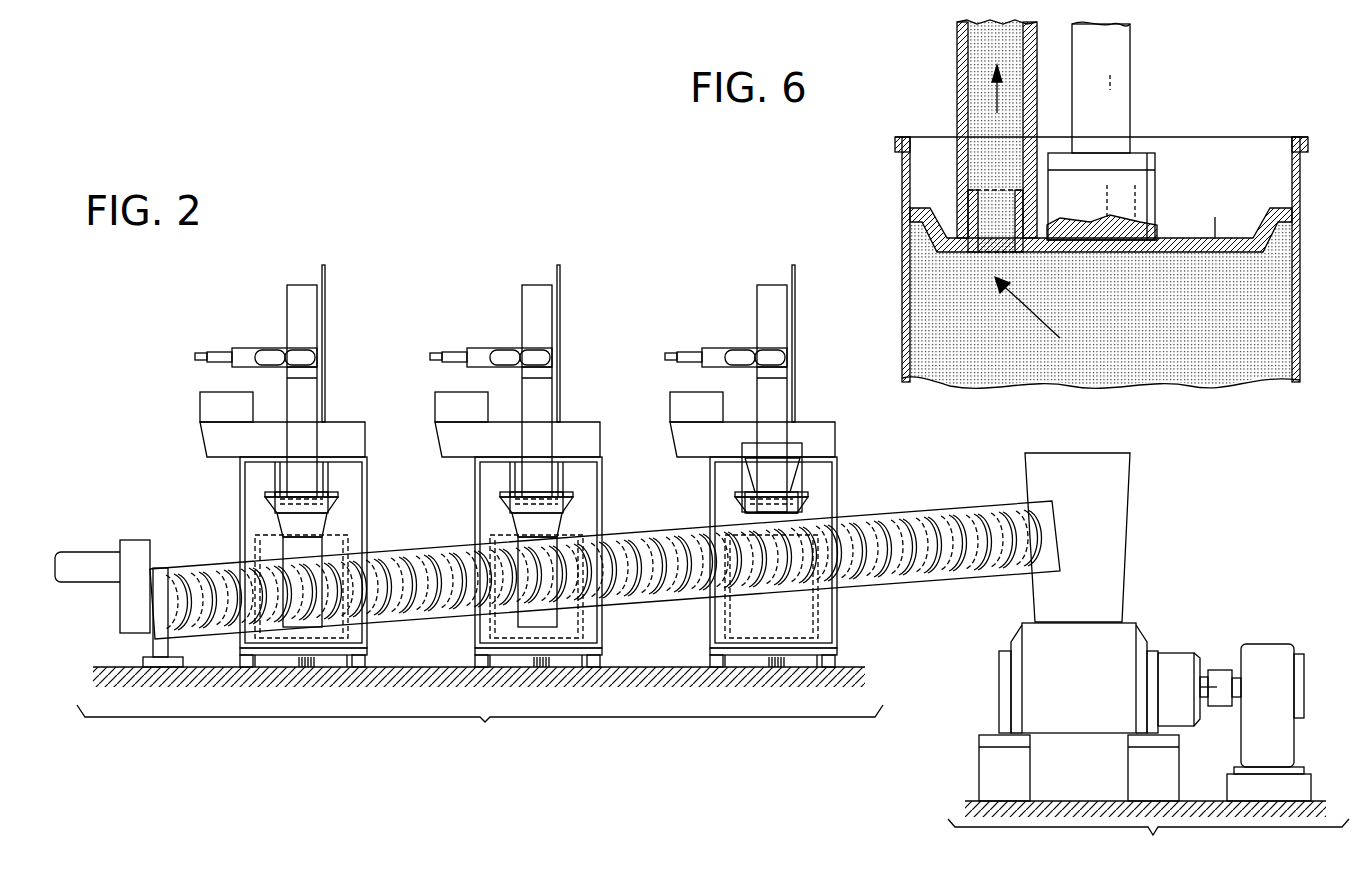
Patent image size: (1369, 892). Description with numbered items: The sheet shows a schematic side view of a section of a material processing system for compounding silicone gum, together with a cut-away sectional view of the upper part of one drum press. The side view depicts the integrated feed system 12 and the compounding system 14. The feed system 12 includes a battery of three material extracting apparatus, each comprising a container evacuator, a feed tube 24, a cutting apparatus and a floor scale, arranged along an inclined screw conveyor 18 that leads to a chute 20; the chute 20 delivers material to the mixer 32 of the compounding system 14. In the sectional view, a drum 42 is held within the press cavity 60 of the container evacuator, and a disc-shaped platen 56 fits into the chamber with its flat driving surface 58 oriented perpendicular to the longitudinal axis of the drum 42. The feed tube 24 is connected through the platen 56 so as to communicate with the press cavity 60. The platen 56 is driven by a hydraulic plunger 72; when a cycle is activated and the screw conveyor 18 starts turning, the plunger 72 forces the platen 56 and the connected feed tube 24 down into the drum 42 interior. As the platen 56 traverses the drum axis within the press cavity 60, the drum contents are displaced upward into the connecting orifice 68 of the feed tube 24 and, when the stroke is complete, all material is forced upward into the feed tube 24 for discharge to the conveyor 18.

In FIG. 2, the feed system 12 is at (480, 729).
In FIG. 2, the compounding system 14 is at (1148, 706).
In FIG. 2, the conveyor 18 is at (921, 508).
In FIG. 2, the chute 20 is at (1133, 483).
In FIG. 6, the feed tube 24 is at (957, 60).
In FIG. 2, the mixer 32 is at (1145, 637).
In FIG. 6, the drum 42 is at (902, 227).
In FIG. 6, the platen 56 is at (1215, 217).
In FIG. 6, the flat driving surface 58 is at (1207, 253).
In FIG. 6, the press cavity 60 is at (1152, 325).
In FIG. 6, the connecting orifice 68 is at (990, 253).
In FIG. 6, the plunger 72 is at (1143, 150).